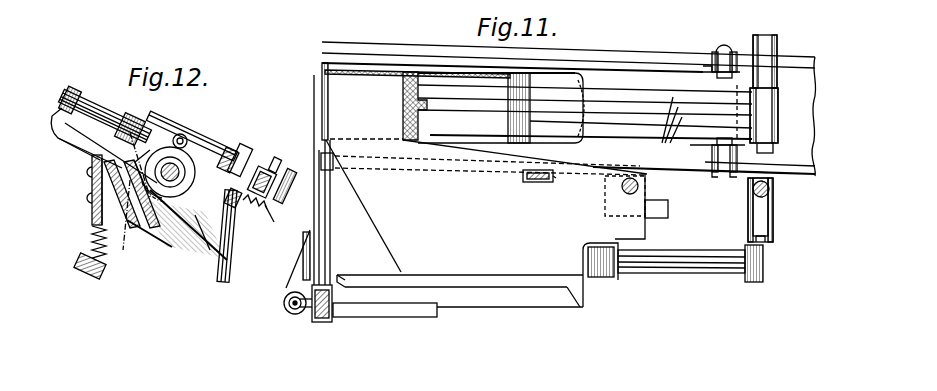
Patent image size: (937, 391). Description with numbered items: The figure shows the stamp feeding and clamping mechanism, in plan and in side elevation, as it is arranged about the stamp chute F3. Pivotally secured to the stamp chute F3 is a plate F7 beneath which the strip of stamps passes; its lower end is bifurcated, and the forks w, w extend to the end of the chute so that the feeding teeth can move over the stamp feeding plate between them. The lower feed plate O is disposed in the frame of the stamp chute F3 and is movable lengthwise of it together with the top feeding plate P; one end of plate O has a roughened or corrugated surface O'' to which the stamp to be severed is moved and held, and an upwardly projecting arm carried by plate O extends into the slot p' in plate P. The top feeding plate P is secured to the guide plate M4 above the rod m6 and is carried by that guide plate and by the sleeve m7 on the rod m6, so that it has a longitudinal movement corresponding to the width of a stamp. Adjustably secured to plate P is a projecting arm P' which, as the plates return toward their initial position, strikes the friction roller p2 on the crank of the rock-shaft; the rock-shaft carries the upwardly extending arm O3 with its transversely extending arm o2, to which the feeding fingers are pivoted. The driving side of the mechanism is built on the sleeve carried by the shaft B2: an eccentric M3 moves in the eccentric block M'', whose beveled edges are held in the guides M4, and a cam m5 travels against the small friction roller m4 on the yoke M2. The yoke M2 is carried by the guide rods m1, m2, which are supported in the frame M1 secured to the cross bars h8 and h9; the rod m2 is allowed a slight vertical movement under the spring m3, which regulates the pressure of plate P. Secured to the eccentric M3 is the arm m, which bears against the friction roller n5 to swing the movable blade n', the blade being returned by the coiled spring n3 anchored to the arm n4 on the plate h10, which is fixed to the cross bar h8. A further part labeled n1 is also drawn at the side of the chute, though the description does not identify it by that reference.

In FIG. 12, the rod m6 is at (107, 109).
In FIG. 11, the rod m6 is at (688, 251).
In FIG. 12, the sleeve m7 is at (132, 113).
In FIG. 11, the sleeve m7 is at (584, 256).
In FIG. 12, the yoke M2 is at (190, 120).
In FIG. 12, the shaft B2 is at (201, 148).
In FIG. 12, the friction roller m4 is at (203, 140).
In FIG. 12, the cross bar h9 is at (91, 183).
In FIG. 12, the eccentric M3 is at (123, 228).
In FIG. 12, the frame M1 is at (163, 230).
In FIG. 12, the guide rod m1 is at (187, 240).
In FIG. 12, the guide rod m2 is at (92, 222).
In FIG. 12, the spring m3 is at (92, 256).
In FIG. 12, the cam m5 is at (236, 152).
In FIG. 12, the friction roller n5 is at (266, 168).
In FIG. 11, the friction roller n5 is at (322, 323).
In FIG. 12, the movable blade n' is at (283, 158).
In FIG. 12, the plate h10 is at (286, 183).
In FIG. 12, the arm m is at (245, 208).
In FIG. 11, the arm m is at (396, 318).
In FIG. 12, the arm n4 is at (262, 214).
In FIG. 11, the arm n4 is at (289, 292).
In FIG. 12, the coiled spring n3 is at (268, 201).
In FIG. 11, the coiled spring n3 is at (292, 314).
In FIG. 12, the cross bar h8 is at (227, 272).
In FIG. 11, the stamp chute F3 is at (678, 63).
In FIG. 11, the fork w is at (483, 147).
In FIG. 11, the roughened or corrugated surface O'' is at (493, 107).
In FIG. 11, the plate F7 is at (585, 111).
In FIG. 11, the upwardly extending arm O3 is at (667, 129).
In FIG. 11, the transversely extending arm o2 is at (770, 144).
In FIG. 11, the plate n1 is at (321, 110).
In FIG. 11, the top feeding plate P is at (486, 205).
In FIG. 11, the projecting arm P' is at (645, 197).
In FIG. 11, the lower feed plate O is at (530, 188).
In FIG. 11, the slot p' is at (564, 189).
In FIG. 11, the eccentric block M'' is at (460, 308).
In FIG. 11, the guide plate M4 is at (342, 279).
In FIG. 11, the friction roller p2 is at (774, 222).